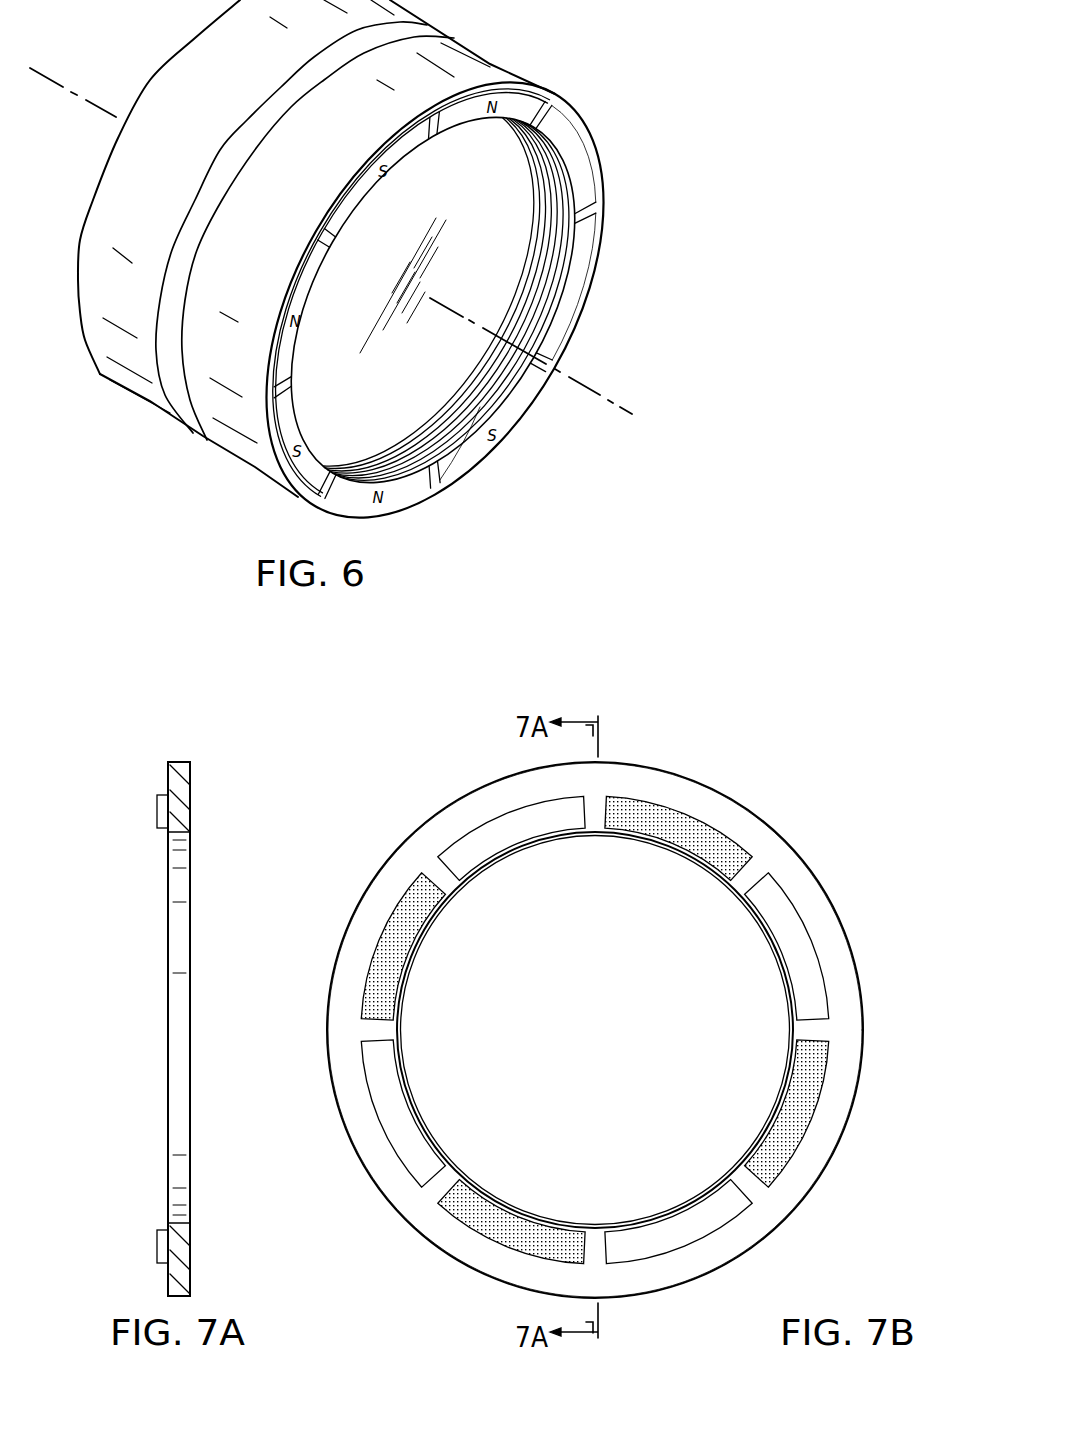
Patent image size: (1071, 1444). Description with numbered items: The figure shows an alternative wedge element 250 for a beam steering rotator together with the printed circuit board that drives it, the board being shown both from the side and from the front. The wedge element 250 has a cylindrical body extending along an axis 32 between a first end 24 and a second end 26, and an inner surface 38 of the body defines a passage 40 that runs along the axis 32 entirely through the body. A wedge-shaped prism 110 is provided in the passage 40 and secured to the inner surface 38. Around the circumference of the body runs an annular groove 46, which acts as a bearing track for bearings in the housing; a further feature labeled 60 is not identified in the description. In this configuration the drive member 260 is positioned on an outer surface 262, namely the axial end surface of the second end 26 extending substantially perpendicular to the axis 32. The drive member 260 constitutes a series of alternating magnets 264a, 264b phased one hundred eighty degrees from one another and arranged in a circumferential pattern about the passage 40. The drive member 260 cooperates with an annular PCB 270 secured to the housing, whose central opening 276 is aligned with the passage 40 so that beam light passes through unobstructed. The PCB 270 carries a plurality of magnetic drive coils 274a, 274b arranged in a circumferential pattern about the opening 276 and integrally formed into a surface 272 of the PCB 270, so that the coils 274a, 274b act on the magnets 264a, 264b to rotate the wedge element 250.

In FIG. 6, the first end 24 is at (133, 56).
In FIG. 6, the housing rear edge 60 is at (206, 36).
In FIG. 6, the annular groove 46 is at (245, 140).
In FIG. 6, the wedge element 250 is at (199, 468).
In FIG. 6, the axis 32 is at (612, 403).
In FIG. 6, the second end 26 is at (510, 494).
In FIG. 6, the outer surface 262 is at (438, 482).
In FIG. 6, the inner surface 38 is at (484, 408).
In FIG. 6, the wedge-shaped prism 110 is at (470, 202).
In FIG. 6, the passage 40 is at (543, 298).
In FIG. 6, the drive member 260 is at (311, 225).
In FIG. 6, the magnet 264a is at (596, 246).
In FIG. 6, the magnet 264b is at (595, 182).
In FIG. 7A, the PCB 270 is at (108, 884).
In FIG. 7B, the PCB 270 is at (808, 806).
In FIG. 7A, the surface 272 is at (167, 1093).
In FIG. 7B, the surface 272 is at (370, 890).
In FIG. 7A, the magnetic drive coil 274a is at (157, 812).
In FIG. 7B, the magnetic drive coil 274a is at (467, 843).
In FIG. 7A, the magnetic drive coil 274b is at (157, 1248).
In FIG. 7B, the magnetic drive coil 274b is at (808, 1140).
In FIG. 7A, the central opening 276 is at (162, 1027).
In FIG. 7B, the central opening 276 is at (685, 1182).